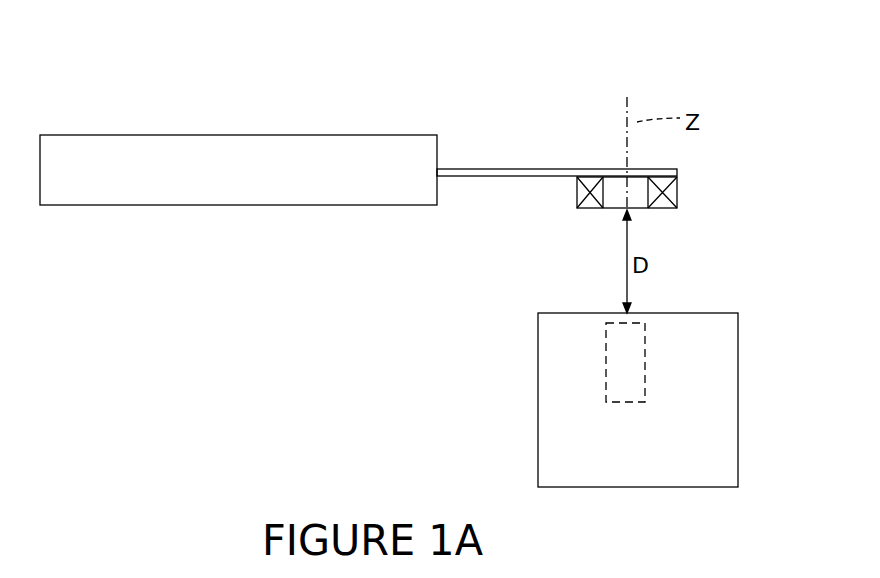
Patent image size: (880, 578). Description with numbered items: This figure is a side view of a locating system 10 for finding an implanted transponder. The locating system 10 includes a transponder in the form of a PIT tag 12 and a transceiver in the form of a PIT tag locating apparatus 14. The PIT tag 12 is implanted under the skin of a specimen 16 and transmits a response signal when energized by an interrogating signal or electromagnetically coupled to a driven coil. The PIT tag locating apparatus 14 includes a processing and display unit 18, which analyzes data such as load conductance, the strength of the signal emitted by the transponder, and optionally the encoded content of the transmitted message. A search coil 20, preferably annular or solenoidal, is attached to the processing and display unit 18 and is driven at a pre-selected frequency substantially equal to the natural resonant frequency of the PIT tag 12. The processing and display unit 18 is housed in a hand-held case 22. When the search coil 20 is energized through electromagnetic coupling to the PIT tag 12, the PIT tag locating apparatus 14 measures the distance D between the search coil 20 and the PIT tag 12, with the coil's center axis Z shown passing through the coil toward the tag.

The locating system 10 is at (158, 337).
The PIT tag 12 is at (603, 380).
The PIT tag locating apparatus 14 is at (46, 93).
The specimen 16 is at (738, 358).
The processing and display unit 18 is at (375, 181).
The search coil 20 is at (678, 197).
The hand-held case 22 is at (320, 135).